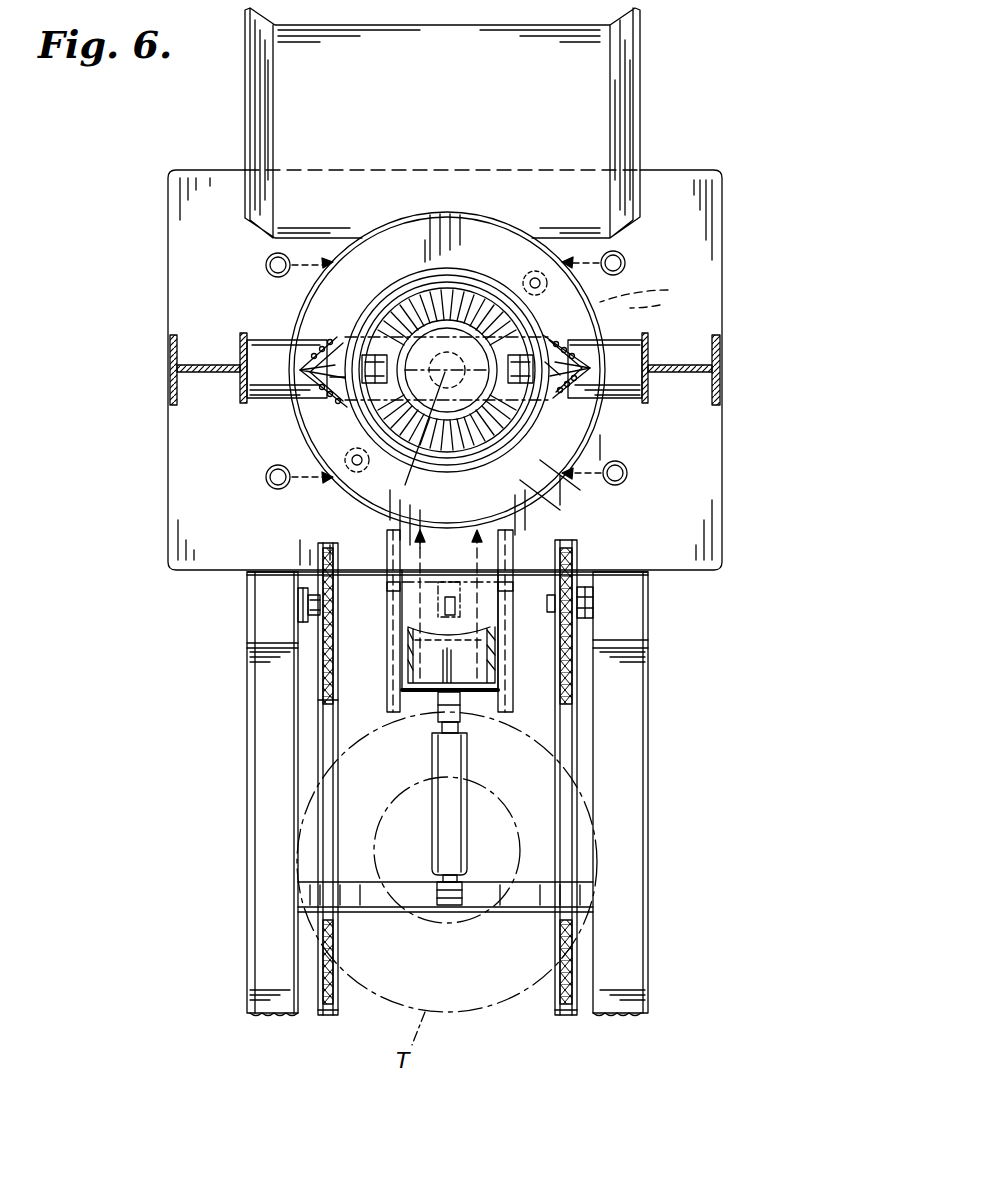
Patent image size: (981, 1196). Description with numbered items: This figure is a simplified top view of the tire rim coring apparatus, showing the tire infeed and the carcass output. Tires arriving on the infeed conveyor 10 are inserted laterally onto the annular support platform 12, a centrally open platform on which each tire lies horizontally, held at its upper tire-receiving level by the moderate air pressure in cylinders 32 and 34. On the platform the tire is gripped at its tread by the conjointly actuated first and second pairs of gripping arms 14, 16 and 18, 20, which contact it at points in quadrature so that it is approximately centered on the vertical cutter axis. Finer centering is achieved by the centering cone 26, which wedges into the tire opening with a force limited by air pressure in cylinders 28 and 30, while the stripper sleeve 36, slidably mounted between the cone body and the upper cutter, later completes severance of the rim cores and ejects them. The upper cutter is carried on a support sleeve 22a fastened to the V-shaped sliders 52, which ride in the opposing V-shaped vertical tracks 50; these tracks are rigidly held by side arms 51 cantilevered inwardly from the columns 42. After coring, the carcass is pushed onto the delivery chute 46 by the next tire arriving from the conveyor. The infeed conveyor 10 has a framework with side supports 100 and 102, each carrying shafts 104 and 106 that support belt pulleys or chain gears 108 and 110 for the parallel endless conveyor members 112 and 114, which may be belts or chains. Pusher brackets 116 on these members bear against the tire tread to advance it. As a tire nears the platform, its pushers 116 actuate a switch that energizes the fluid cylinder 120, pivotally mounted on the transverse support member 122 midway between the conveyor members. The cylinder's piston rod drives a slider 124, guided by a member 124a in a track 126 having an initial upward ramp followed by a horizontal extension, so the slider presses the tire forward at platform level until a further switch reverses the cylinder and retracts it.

The infeed conveyor 10 is at (652, 840).
The annular support platform 12 is at (497, 215).
The gripping arm 14 is at (266, 487).
The gripping arm 16 is at (626, 482).
The gripping arm 18 is at (264, 262).
The gripping arm 20 is at (628, 262).
The support sleeve 22a is at (468, 468).
The centering cone 26 is at (430, 310).
The air cylinder 28 is at (505, 312).
The air cylinder 30 is at (372, 355).
The air cylinder 32 is at (300, 442).
The air cylinder 34 is at (650, 291).
The stripper sleeve 36 is at (290, 395).
The column 42 is at (170, 355).
The delivery chute 46 is at (598, 86).
The V-shaped vertical track 50 is at (300, 360).
The side arm 51 is at (255, 382).
The V-shaped slider 52 is at (320, 343).
The side support 100 is at (648, 906).
The side support 102 is at (270, 906).
The shaft 104 is at (600, 604).
The shaft 106 is at (322, 602).
The belt pulley or chain gear 108 is at (578, 558).
The belt pulley or chain gear 110 is at (320, 548).
The endless conveyor member 112 is at (570, 696).
The endless conveyor member 114 is at (328, 682).
The pusher bracket 116 is at (340, 1002).
The fluid cylinder 120 is at (462, 828).
The transverse support member 122 is at (526, 908).
The slider 124 is at (428, 676).
The guide member 124a is at (396, 666).
The track 126 is at (392, 614).